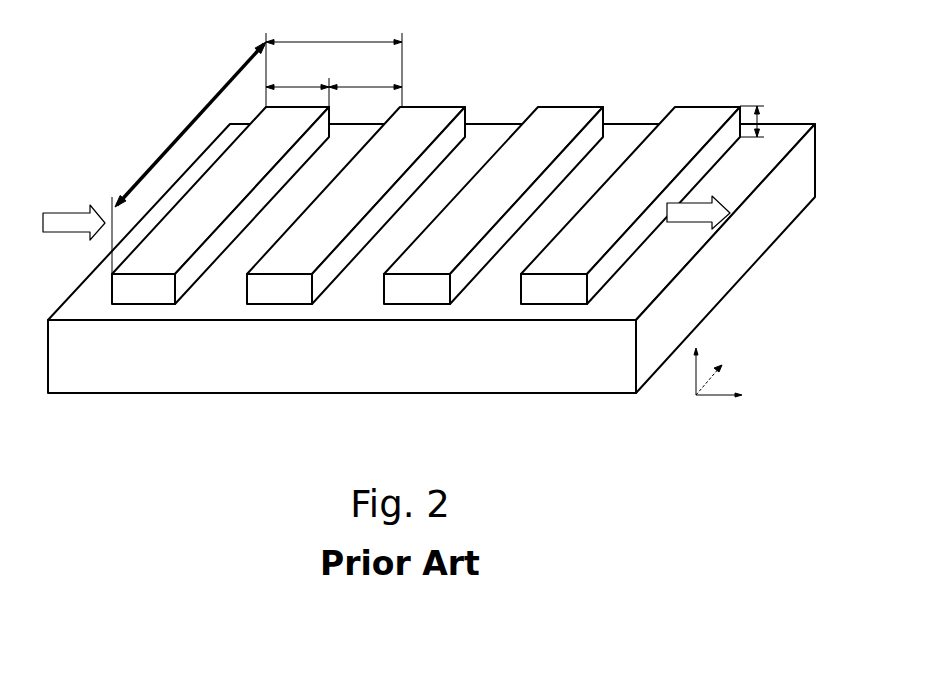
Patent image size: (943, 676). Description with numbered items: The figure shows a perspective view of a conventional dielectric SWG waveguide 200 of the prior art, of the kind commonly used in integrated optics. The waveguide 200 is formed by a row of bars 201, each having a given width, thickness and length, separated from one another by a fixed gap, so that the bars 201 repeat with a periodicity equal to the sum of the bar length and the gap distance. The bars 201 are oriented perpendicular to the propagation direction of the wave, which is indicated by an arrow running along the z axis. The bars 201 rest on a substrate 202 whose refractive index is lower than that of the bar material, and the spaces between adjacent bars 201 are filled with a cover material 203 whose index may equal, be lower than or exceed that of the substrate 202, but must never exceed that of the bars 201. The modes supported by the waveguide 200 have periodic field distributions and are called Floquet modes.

The dielectric SWG waveguide 200 is at (429, 232).
The bars 201 is at (369, 166).
The substrate 202 is at (431, 286).
The cover material 203 is at (521, 80).